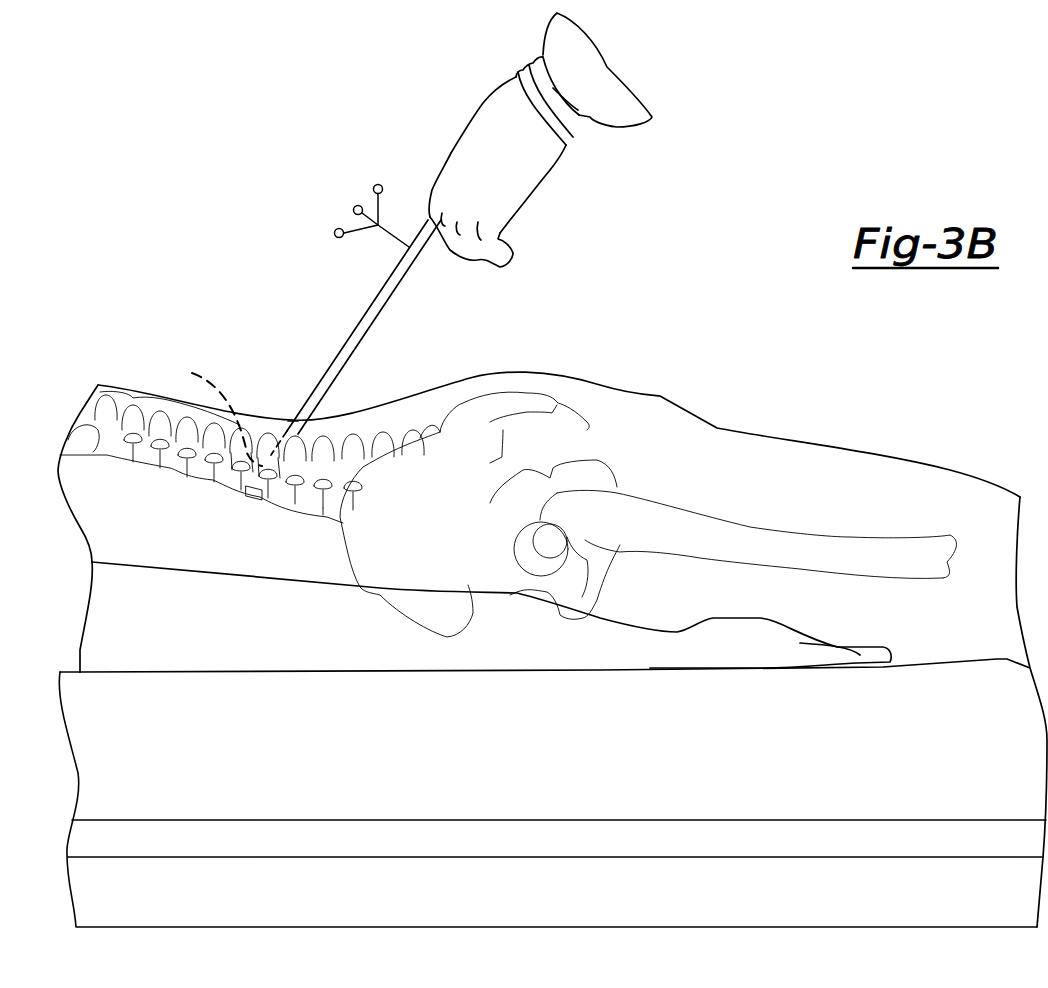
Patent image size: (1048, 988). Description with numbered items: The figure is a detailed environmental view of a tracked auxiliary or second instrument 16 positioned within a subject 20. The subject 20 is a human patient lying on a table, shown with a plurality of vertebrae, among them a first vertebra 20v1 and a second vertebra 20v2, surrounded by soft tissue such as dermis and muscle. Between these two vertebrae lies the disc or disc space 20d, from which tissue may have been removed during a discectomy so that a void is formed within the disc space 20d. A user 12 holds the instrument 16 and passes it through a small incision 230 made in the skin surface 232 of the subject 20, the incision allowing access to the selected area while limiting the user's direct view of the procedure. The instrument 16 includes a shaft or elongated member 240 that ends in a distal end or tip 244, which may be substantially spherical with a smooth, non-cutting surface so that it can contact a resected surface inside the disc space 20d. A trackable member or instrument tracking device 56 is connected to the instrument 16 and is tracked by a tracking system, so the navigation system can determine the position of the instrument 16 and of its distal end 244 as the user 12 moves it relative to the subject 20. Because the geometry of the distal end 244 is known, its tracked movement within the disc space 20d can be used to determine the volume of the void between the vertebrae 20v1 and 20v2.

The user 12 is at (652, 80).
The instrument 16 is at (358, 311).
The subject 20 is at (724, 375).
The instrument tracking device 56 is at (368, 172).
The incision 230 is at (293, 422).
The skin surface of patient 232 is at (593, 387).
The elongated member 240 is at (378, 318).
The distal end 244 is at (208, 408).
The first vertebra 20v1 is at (237, 470).
The second vertebra 20v2 is at (268, 485).
The disc space 20d is at (243, 495).